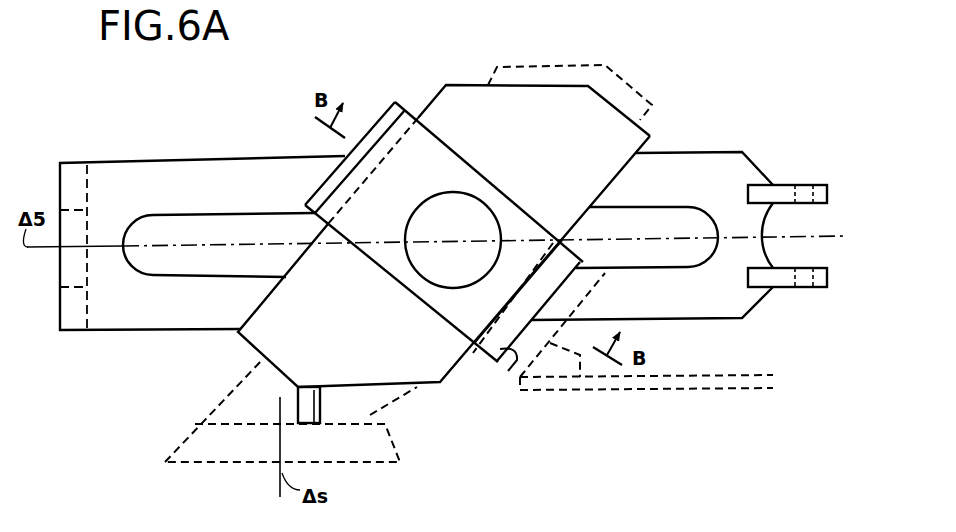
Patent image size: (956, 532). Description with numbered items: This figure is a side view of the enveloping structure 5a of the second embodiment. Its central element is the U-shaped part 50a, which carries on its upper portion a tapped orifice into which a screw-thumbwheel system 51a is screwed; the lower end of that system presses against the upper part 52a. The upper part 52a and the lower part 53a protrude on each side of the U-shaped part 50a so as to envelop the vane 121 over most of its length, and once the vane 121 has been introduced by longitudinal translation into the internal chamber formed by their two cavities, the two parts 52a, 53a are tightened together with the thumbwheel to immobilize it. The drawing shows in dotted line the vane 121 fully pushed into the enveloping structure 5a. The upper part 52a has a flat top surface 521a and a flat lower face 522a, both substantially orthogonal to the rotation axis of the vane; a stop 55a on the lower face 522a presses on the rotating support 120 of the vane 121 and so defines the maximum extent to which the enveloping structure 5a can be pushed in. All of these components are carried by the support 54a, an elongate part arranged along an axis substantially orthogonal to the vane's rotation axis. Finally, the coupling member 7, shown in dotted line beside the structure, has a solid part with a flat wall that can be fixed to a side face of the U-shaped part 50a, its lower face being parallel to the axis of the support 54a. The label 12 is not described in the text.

The support 54a is at (159, 156).
The enveloping structure 5a is at (562, 58).
The upper part 52a is at (437, 108).
The lower face 522a is at (458, 85).
The screw-thumbwheel system 51a is at (478, 208).
The U-shaped part 50a is at (355, 232).
The stop 55a is at (314, 398).
The vane 121 is at (242, 395).
The lower assembly 12 is at (192, 406).
The rotating support 120 is at (208, 440).
The top surface 521a is at (390, 392).
The lower part 53a is at (505, 374).
The coupling member 7 is at (693, 392).